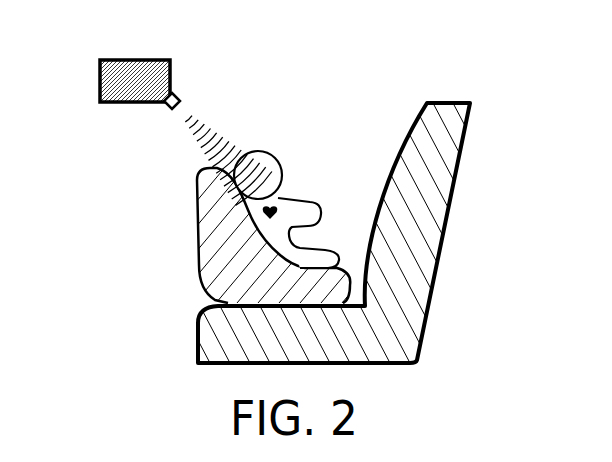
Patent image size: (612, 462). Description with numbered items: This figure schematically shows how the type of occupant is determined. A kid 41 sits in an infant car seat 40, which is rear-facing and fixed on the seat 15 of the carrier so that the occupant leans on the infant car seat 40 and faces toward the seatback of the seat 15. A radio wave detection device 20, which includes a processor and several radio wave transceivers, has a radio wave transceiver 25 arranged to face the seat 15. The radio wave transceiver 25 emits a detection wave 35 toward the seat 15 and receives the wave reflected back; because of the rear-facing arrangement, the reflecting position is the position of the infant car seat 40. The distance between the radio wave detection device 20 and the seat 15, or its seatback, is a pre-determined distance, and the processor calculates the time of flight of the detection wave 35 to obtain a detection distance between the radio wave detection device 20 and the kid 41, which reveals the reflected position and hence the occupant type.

The seat 15 is at (445, 113).
The radio wave detection device 20 is at (132, 60).
The radio wave transceiver 25 is at (176, 94).
The detection wave 35 is at (220, 140).
The infant car seat 40 is at (204, 265).
The kid 41 is at (267, 167).